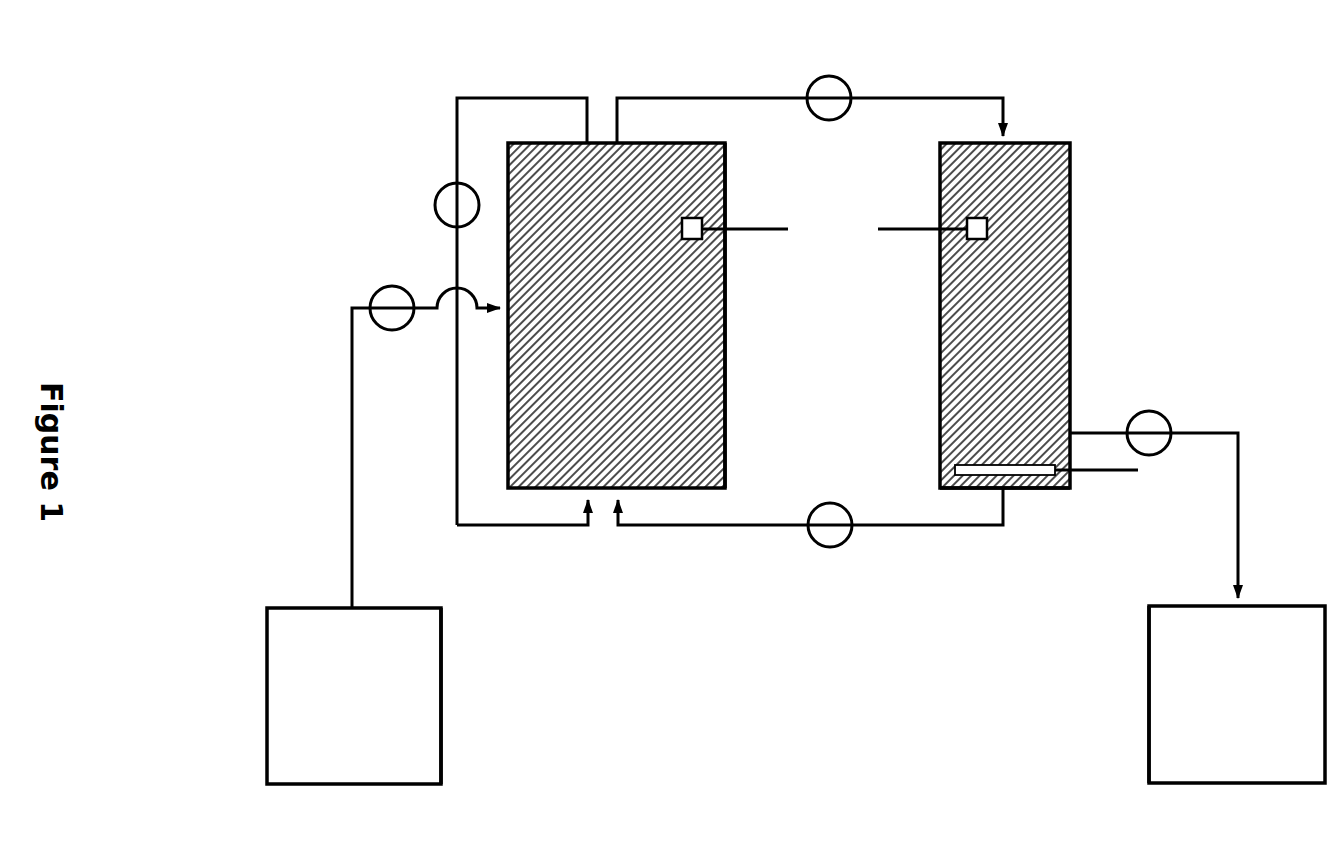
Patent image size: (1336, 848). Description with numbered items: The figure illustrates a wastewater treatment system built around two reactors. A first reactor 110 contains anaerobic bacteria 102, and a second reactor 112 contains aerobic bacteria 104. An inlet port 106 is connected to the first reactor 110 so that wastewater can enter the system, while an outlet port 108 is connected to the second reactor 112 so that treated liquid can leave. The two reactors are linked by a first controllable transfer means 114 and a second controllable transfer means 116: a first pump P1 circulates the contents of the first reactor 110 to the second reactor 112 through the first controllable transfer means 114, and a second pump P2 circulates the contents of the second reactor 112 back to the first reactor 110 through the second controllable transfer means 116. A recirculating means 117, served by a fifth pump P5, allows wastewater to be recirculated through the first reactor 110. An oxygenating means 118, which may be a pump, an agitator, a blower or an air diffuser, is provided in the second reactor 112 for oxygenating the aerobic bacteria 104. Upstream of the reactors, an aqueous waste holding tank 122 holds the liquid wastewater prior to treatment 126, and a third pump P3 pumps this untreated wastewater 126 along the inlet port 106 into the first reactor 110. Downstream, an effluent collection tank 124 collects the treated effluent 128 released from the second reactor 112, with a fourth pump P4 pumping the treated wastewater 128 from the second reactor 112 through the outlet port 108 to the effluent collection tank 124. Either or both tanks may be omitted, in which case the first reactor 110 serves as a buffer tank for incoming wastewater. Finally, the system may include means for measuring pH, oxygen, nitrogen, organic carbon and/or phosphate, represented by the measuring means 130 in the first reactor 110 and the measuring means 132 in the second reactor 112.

The anaerobic bacteria 102 is at (616, 315).
The aerobic bacteria 104 is at (1005, 315).
The inlet port 106 is at (343, 372).
The outlet port 108 is at (1212, 428).
The first reactor 110 is at (732, 400).
The second reactor 112 is at (1030, 498).
The first controllable transfer means 114 is at (898, 92).
The second controllable transfer means 116 is at (900, 540).
The recirculating means 117 is at (442, 143).
The oxygenating means 118 is at (1085, 472).
The aqueous waste holding tank 122 is at (450, 694).
The effluent collection tank 124 is at (1137, 698).
The liquid wastewater prior to treatment 126 is at (354, 696).
The treated effluent 128 is at (1237, 694).
The measuring means 130 is at (708, 212).
The measuring means 132 is at (958, 212).
The first pump P1 is at (829, 85).
The second pump P2 is at (830, 540).
The third pump P3 is at (392, 296).
The fourth pump P4 is at (1149, 421).
The fifth pump P5 is at (442, 205).